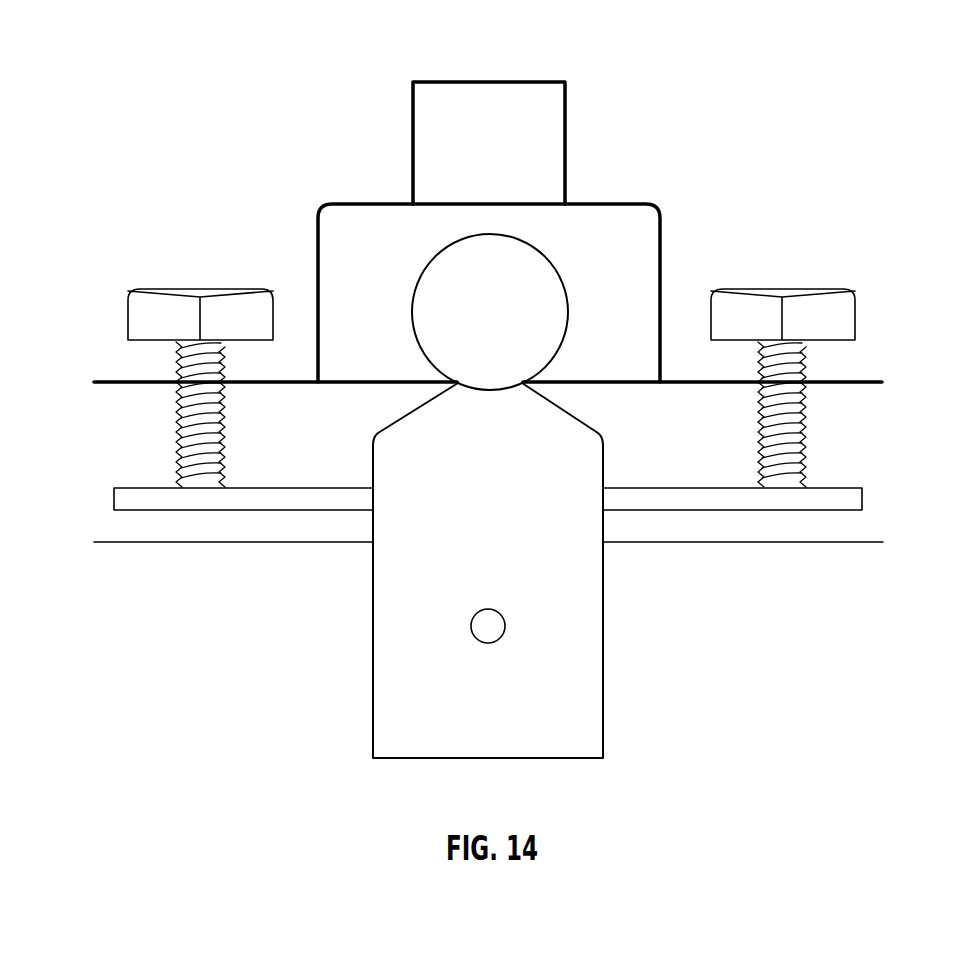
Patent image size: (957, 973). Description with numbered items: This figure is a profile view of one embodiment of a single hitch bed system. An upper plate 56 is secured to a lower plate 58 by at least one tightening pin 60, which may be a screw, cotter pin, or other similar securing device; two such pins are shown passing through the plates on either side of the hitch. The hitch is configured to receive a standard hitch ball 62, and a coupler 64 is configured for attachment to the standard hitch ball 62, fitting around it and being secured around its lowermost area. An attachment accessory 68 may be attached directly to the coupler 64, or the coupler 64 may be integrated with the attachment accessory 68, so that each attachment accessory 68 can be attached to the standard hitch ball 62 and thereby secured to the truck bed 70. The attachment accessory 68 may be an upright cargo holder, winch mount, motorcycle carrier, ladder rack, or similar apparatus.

The upper plate 56 is at (107, 380).
The lower plate 58 is at (139, 498).
The tightening pin 60 is at (817, 300).
The standard hitch ball 62 is at (517, 268).
The coupler 64 is at (335, 222).
The attachment accessory 68 is at (477, 105).
The truck bed 70 is at (733, 542).